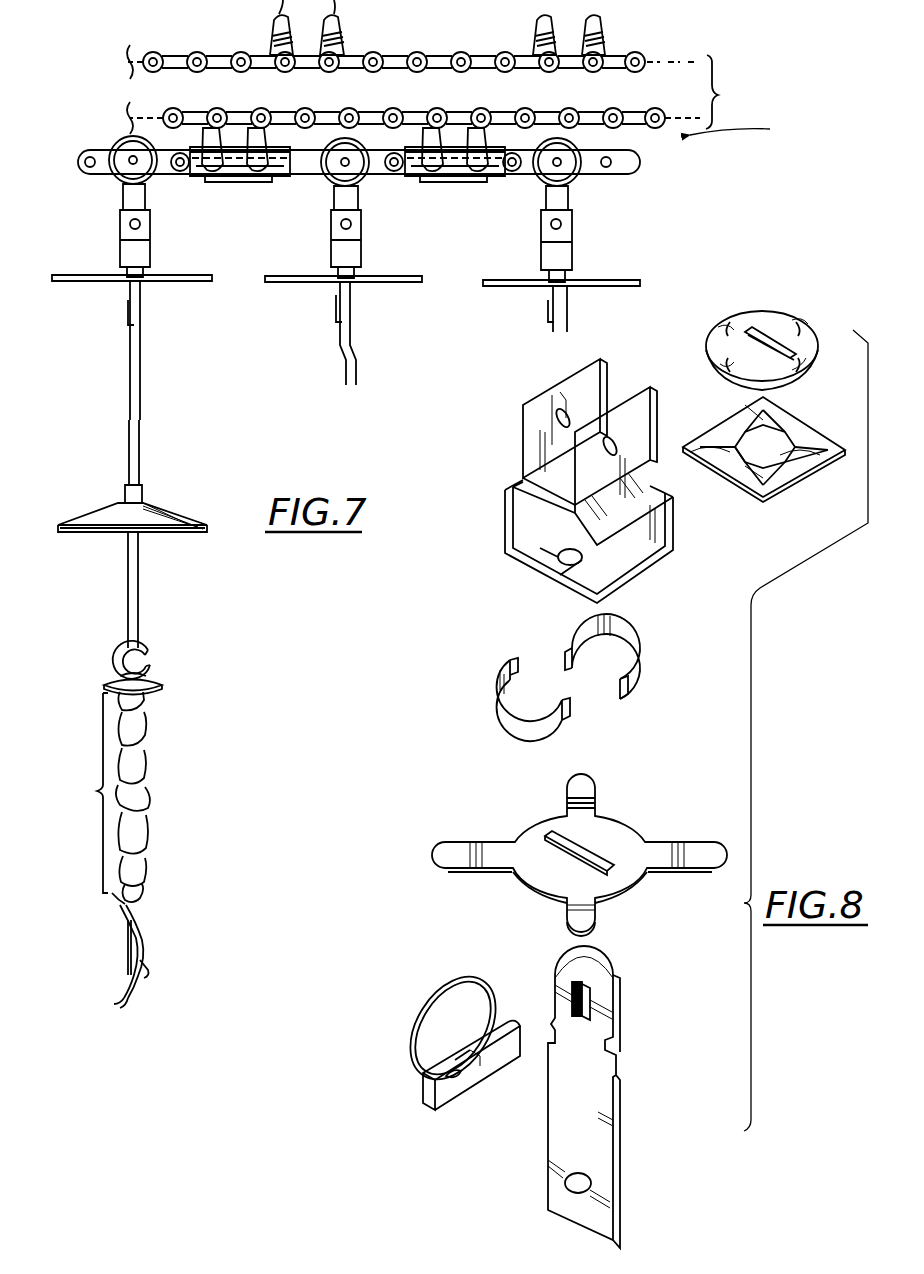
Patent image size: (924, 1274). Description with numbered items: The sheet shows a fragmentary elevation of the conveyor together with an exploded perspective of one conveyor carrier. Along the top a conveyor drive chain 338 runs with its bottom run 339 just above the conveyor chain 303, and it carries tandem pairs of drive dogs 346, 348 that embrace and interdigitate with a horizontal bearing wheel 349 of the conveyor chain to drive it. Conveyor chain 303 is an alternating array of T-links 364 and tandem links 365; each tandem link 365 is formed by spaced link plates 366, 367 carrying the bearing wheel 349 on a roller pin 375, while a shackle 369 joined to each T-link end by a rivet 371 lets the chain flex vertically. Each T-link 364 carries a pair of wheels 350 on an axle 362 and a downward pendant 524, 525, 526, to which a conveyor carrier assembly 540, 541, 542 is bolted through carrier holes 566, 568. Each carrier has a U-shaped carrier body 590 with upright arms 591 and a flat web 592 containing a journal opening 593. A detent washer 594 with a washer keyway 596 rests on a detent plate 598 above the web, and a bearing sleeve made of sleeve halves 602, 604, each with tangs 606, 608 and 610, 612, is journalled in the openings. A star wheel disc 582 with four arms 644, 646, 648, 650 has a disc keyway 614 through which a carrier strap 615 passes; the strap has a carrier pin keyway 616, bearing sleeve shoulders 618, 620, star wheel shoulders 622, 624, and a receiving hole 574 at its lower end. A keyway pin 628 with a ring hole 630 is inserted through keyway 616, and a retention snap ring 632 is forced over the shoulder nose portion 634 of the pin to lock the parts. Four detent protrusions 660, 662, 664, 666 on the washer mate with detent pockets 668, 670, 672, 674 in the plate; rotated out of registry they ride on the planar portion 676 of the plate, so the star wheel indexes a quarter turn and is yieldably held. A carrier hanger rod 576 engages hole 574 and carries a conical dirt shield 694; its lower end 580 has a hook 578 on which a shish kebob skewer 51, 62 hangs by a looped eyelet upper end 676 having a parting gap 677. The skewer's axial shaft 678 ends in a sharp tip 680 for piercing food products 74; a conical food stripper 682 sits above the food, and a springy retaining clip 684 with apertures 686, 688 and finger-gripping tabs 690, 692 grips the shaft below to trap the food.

In FIG. 7, the shish kebob skewer 51 is at (112, 672).
In FIG. 7, the shish kebob skewer 62 is at (170, 764).
In FIG. 7, the food products 74 is at (73, 784).
In FIG. 7, the conveyor chain 303 is at (646, 167).
In FIG. 7, the conveyor drive chain 338 is at (476, 89).
In FIG. 7, the bottom run 339 is at (745, 127).
In FIG. 7, the drive dog 346 is at (283, 126).
In FIG. 7, the drive dog 348 is at (200, 130).
In FIG. 7, the horizontal conveyor chain bearing wheel 349 is at (228, 190).
In FIG. 7, the wheel 350 is at (122, 171).
In FIG. 7, the axle 362 is at (133, 160).
In FIG. 7, the T-link 364 is at (103, 142).
In FIG. 7, the tandem link 365 is at (254, 188).
In FIG. 7, the link plate 366 is at (213, 175).
In FIG. 7, the link plate 367 is at (228, 190).
In FIG. 7, the shackle 369 is at (299, 188).
In FIG. 7, the rivet 371 is at (290, 152).
In FIG. 7, the roller pin 375 is at (238, 210).
In FIG. 7, the conveyor pendant 524 is at (123, 195).
In FIG. 7, the conveyor pendant 525 is at (360, 200).
In FIG. 7, the conveyor pendant 526 is at (568, 194).
In FIG. 7, the conveyor carrier assembly 540 is at (112, 245).
In FIG. 7, the conveyor carrier assembly 541 is at (352, 290).
In FIG. 7, the conveyor carrier assembly 542 is at (580, 232).
In FIG. 8, the carrier hole 566 is at (602, 450).
In FIG. 8, the carrier hole 568 is at (562, 390).
In FIG. 7, the receiving hole 574 is at (148, 330).
In FIG. 8, the receiving hole 574 is at (568, 1188).
In FIG. 7, the carrier hanger rod 576 is at (130, 400).
In FIG. 7, the hook 578 is at (144, 636).
In FIG. 7, the lower end 580 is at (122, 614).
In FIG. 7, the star wheel disc 582 is at (60, 278).
In FIG. 8, the star wheel disc 582 is at (527, 899).
In FIG. 8, the U-shaped carrier body 590 is at (500, 512).
In FIG. 8, the upright arm 591 is at (538, 416).
In FIG. 8, the flat web 592 is at (515, 552).
In FIG. 8, the journal opening 593 is at (532, 564).
In FIG. 8, the detent washer 594 is at (716, 336).
In FIG. 8, the washer keyway 596 is at (760, 455).
In FIG. 8, the detent plate 598 is at (650, 498).
In FIG. 8, the sleeve half 602 is at (494, 722).
In FIG. 8, the sleeve half 604 is at (638, 664).
In FIG. 8, the tang 606 is at (540, 642).
In FIG. 8, the tang 608 is at (566, 710).
In FIG. 8, the tang 610 is at (618, 684).
In FIG. 8, the tang 612 is at (563, 636).
In FIG. 8, the disc keyway 614 is at (580, 840).
In FIG. 7, the carrier strap 615 is at (125, 288).
In FIG. 8, the carrier strap 615 is at (555, 1035).
In FIG. 8, the carrier pin keyway 616 is at (606, 980).
In FIG. 8, the bearing sleeve shoulder 618 is at (560, 1036).
In FIG. 8, the bearing sleeve shoulder 620 is at (622, 1104).
In FIG. 8, the star wheel shoulder 622 is at (612, 1012).
In FIG. 8, the star wheel shoulder 624 is at (612, 1044).
In FIG. 8, the keyway pin 628 is at (449, 1110).
In FIG. 8, the ring hole 630 is at (442, 1054).
In FIG. 8, the retention snap ring 632 is at (452, 982).
In FIG. 8, the shoulder nose portion 634 is at (518, 1024).
In FIG. 8, the star wheel arm 644 is at (592, 918).
In FIG. 8, the star wheel arm 646 is at (695, 850).
In FIG. 8, the star wheel arm 648 is at (584, 788).
In FIG. 8, the star wheel arm 650 is at (450, 844).
In FIG. 8, the detent protrusion 660 is at (730, 348).
In FIG. 8, the detent protrusion 662 is at (800, 360).
In FIG. 8, the detent protrusion 664 is at (798, 328).
In FIG. 8, the detent protrusion 666 is at (726, 326).
In FIG. 8, the detent pocket 668 is at (738, 484).
In FIG. 8, the detent pocket 670 is at (794, 478).
In FIG. 8, the detent pocket 672 is at (782, 432).
In FIG. 8, the detent pocket 674 is at (734, 418).
In FIG. 7, the planar portion (also looped eyelet upper end) 676 is at (122, 649).
In FIG. 8, the planar portion (also looped eyelet upper end) 676 is at (707, 434).
In FIG. 7, the parting gap 677 is at (146, 660).
In FIG. 7, the axial shaft 678 is at (124, 942).
In FIG. 7, the sharp tip 680 is at (130, 975).
In FIG. 7, the food stripper 682 is at (150, 684).
In FIG. 7, the retaining clip 684 is at (148, 940).
In FIG. 7, the aperture 686 is at (137, 920).
In FIG. 7, the aperture 688 is at (136, 972).
In FIG. 7, the finger-gripping tab 690 is at (117, 1000).
In FIG. 7, the finger-gripping tab 692 is at (112, 892).
In FIG. 7, the dirt shield 694 is at (94, 520).